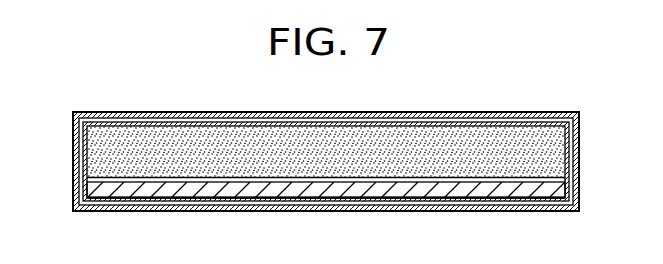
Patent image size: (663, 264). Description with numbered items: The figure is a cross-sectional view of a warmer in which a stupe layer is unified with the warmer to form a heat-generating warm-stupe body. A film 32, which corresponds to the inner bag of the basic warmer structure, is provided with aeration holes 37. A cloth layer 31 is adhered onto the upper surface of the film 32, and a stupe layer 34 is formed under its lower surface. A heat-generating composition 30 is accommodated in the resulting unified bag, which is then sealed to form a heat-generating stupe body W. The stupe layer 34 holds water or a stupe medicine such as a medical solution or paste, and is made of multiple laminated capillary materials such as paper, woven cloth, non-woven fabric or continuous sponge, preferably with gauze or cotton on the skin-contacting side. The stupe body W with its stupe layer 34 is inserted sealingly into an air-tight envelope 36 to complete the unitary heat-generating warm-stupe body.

The heat-generating stupe body W is at (72, 145).
The heat-generating composition 30 is at (542, 158).
The cloth layer 31 is at (435, 119).
The film 32 is at (572, 140).
The stupe layer 34 is at (544, 192).
The air-tight envelope 36 is at (555, 111).
The aeration holes 37 is at (500, 123).